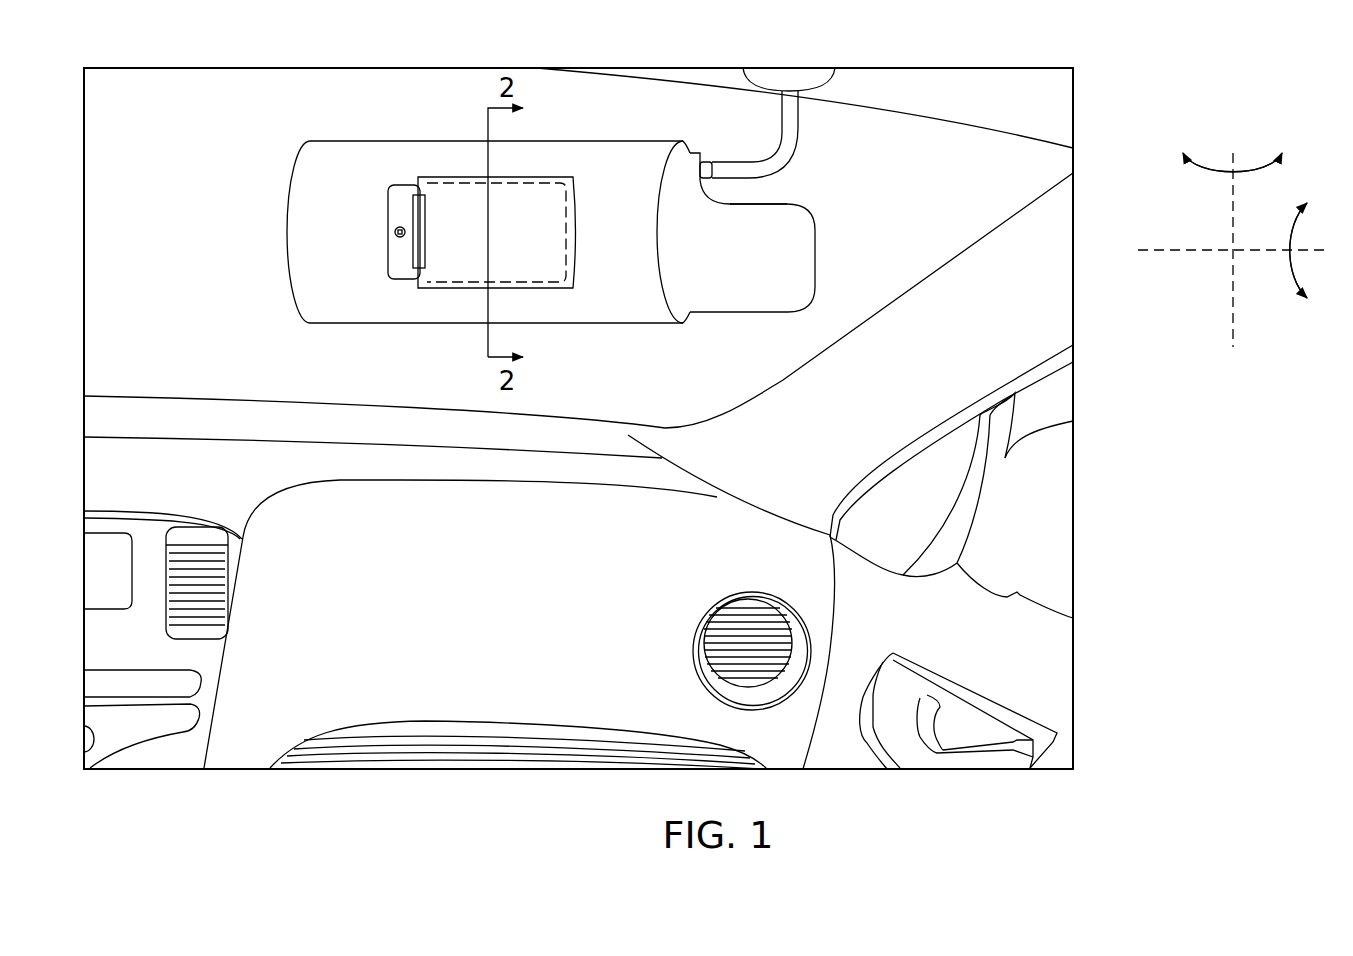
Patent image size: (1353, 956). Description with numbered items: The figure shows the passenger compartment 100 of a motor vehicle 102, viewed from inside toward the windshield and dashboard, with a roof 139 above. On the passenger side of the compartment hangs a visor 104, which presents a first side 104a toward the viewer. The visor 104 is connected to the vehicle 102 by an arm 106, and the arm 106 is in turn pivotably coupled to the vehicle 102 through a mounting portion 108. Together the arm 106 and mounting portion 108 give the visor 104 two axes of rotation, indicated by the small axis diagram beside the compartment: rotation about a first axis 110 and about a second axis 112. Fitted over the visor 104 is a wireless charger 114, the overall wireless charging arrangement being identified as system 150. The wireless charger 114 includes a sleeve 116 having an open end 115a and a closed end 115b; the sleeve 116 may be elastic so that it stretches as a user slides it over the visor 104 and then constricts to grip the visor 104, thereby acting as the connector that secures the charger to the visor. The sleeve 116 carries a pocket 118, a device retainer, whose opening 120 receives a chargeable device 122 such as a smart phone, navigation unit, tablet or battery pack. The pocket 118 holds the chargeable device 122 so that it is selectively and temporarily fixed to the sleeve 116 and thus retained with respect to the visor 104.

The passenger compartment 100 is at (125, 219).
The motor vehicle 102 is at (670, 76).
The roof 139 is at (905, 79).
The display system 150 is at (421, 92).
The mounting portion 108 is at (758, 90).
The arm 106 is at (797, 164).
The visor 104 is at (816, 258).
The first side 104a is at (709, 269).
The wireless charger 114 is at (462, 261).
The sleeve 116 is at (603, 325).
The open end 115a is at (680, 323).
The closed end 115b is at (287, 232).
The pocket 118 is at (577, 232).
The opening 120 is at (386, 180).
The chargeable device 122 is at (388, 232).
The second axis 112 is at (1233, 212).
The first axis 110 is at (1190, 253).